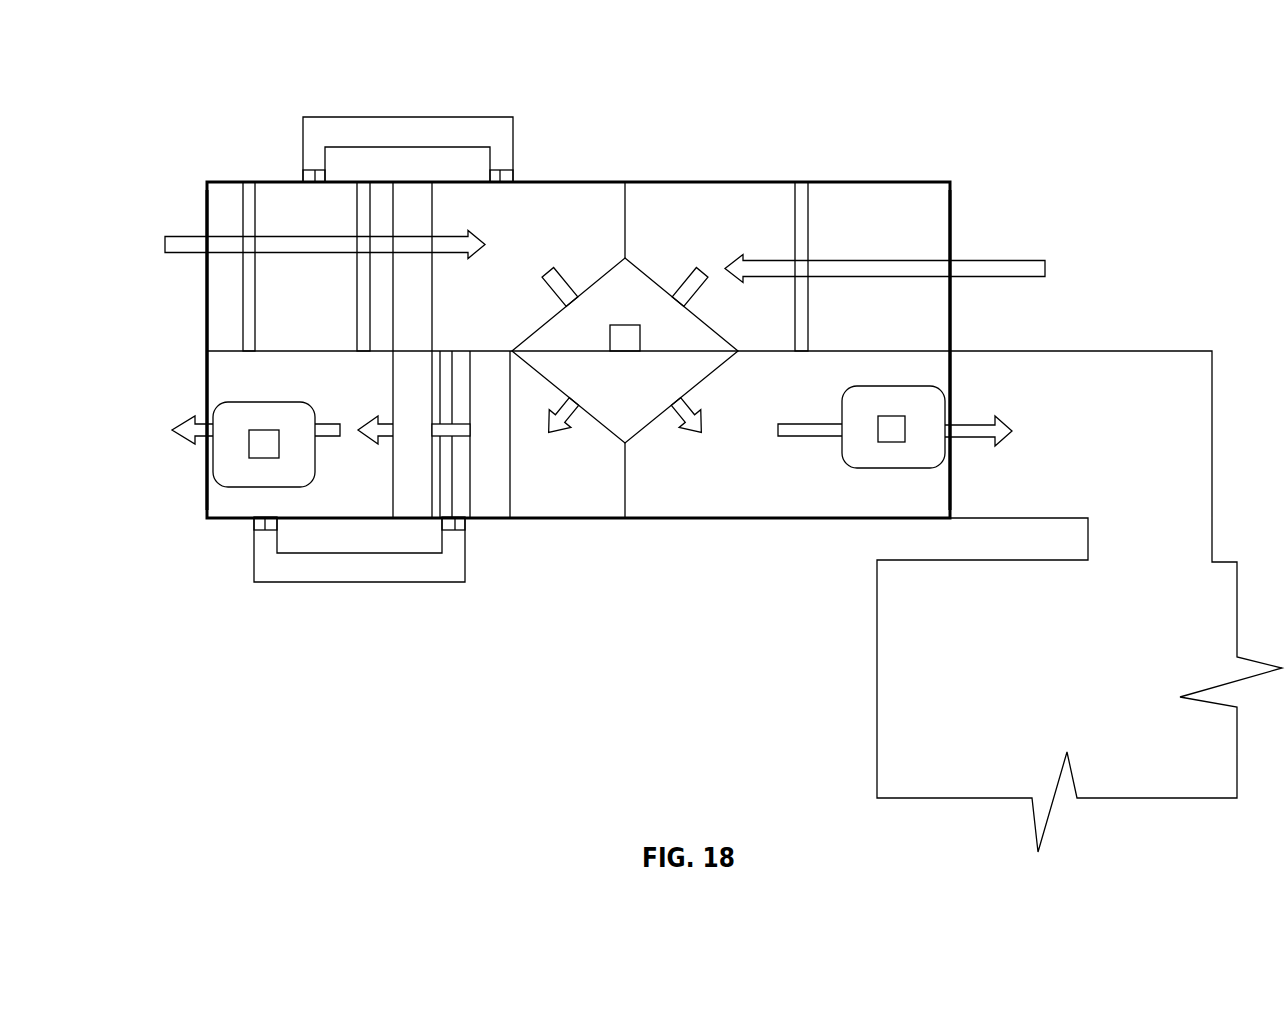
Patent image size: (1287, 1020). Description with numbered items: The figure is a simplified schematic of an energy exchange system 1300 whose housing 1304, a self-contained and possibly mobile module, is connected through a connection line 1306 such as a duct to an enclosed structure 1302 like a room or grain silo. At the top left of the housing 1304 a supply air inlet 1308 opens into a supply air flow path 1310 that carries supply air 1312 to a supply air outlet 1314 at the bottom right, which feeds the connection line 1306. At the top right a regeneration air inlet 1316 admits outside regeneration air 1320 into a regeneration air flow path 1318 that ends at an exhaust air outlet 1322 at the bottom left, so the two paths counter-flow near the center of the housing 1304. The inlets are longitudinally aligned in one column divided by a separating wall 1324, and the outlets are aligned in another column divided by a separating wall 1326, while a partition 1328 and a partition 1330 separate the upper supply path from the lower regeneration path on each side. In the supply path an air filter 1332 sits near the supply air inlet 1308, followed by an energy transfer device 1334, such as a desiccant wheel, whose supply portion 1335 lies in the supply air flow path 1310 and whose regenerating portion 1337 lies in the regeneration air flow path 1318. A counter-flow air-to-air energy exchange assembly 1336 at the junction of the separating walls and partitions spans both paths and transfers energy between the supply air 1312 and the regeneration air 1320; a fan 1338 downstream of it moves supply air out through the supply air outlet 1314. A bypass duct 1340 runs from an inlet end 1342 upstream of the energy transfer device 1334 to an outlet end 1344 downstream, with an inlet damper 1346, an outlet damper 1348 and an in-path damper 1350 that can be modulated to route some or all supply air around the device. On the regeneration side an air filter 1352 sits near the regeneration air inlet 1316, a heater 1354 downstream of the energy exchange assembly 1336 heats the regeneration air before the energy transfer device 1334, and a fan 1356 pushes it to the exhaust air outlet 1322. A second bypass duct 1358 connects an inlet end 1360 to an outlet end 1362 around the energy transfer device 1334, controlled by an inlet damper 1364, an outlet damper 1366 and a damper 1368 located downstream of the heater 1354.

The energy exchange system 1300 is at (232, 109).
The enclosed structure 1302 is at (981, 638).
The housing 1304 is at (218, 182).
The connection line 1306 is at (1075, 413).
The supply air inlet 1308 is at (207, 288).
The supply air flow path 1310 is at (303, 253).
The supply air 1312 is at (586, 236).
The supply air outlet 1314 is at (952, 405).
The regeneration air inlet 1316 is at (955, 218).
The regeneration air flow path 1318 is at (837, 257).
The regeneration air 1320 is at (718, 256).
The exhaust air outlet 1322 is at (205, 495).
The separating wall 1324 is at (628, 205).
The separating wall 1326 is at (623, 497).
The partition 1328 is at (268, 350).
The partition 1330 is at (898, 350).
The air filter 1332 is at (252, 208).
The energy transfer device 1334 is at (407, 207).
The supply portion 1335 is at (418, 287).
The energy exchange assembly 1336 is at (598, 303).
The regenerating portion 1337 is at (393, 383).
The fan 1338 is at (858, 470).
The bypass duct 1340 is at (385, 117).
The inlet end 1342 is at (343, 185).
The outlet end 1344 is at (517, 177).
The inlet damper 1346 is at (317, 167).
The outlet damper 1348 is at (498, 168).
The damper 1350 is at (367, 197).
The air filter 1352 is at (802, 195).
The heater 1354 is at (490, 495).
The fan 1356 is at (237, 487).
The bypass duct 1358 is at (357, 583).
The inlet end 1360 is at (442, 522).
The outlet end 1362 is at (280, 520).
The inlet damper 1364 is at (453, 532).
The outlet damper 1366 is at (265, 532).
The damper 1368 is at (455, 370).